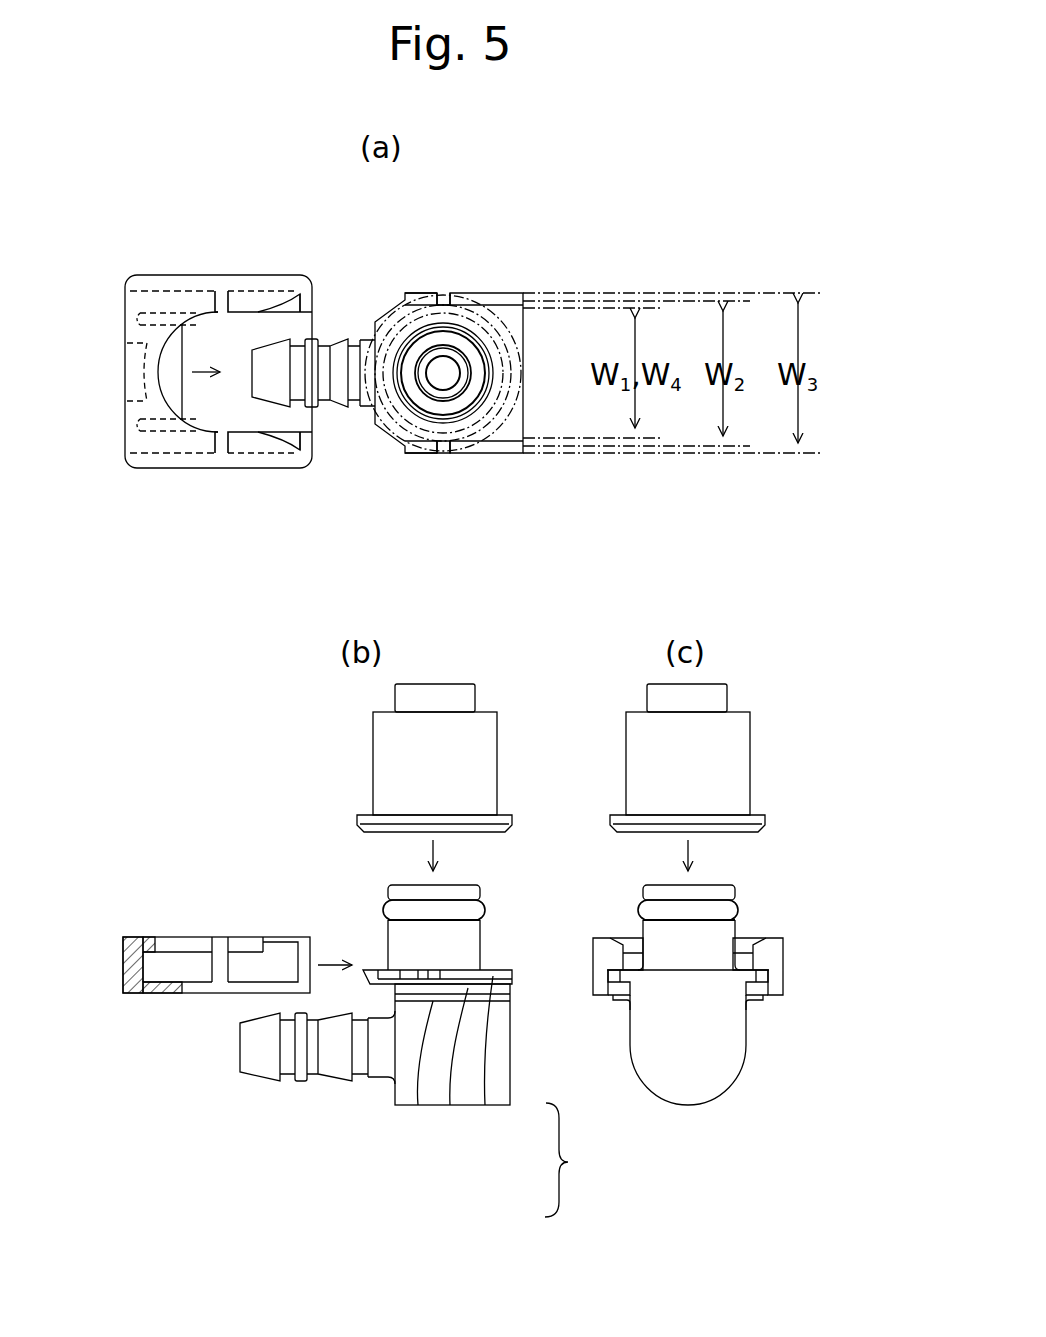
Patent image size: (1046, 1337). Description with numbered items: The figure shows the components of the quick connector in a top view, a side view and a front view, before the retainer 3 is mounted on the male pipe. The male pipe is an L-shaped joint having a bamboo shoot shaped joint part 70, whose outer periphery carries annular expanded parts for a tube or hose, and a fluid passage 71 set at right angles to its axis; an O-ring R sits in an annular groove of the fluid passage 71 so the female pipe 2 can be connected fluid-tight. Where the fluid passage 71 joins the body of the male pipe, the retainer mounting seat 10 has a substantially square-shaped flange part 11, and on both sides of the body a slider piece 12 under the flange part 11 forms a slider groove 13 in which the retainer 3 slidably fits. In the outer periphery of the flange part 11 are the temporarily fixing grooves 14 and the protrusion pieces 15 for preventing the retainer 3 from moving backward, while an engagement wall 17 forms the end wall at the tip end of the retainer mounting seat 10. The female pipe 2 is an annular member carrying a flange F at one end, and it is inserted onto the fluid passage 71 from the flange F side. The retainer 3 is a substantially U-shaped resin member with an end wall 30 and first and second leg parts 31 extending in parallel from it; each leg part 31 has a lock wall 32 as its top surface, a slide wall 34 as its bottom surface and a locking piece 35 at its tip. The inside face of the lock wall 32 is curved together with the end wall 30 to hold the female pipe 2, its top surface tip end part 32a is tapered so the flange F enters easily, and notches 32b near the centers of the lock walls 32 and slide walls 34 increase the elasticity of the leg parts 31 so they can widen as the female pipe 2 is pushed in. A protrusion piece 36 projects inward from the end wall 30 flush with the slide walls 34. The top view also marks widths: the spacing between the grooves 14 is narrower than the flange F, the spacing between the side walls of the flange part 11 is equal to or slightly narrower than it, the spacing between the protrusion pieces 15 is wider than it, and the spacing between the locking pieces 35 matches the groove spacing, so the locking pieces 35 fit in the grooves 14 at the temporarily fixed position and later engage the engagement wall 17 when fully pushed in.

The female pipe 2 is at (477, 750).
The retainer 3 is at (134, 266).
The retainer mounting seat 10 is at (577, 1160).
The flange part 11 is at (505, 442).
The slider piece 12 is at (418, 1105).
The slider groove 13 is at (450, 1105).
The temporarily fixing groove 14 is at (446, 300).
The protrusion piece 15 is at (436, 297).
The engagement wall 17 is at (512, 333).
The end wall 30 is at (124, 372).
The leg part 31 is at (170, 277).
The lock wall 32 is at (245, 298).
The top surface tip end part 32a is at (284, 300).
The notch 32b is at (208, 278).
The slide wall 34 is at (257, 987).
The locking piece 35 is at (322, 296).
The protrusion piece 36 is at (172, 376).
The bamboo shoot shaped joint part 70 is at (325, 350).
The fluid passage 71 is at (466, 330).
The flange F is at (505, 332).
The O-ring R is at (480, 905).